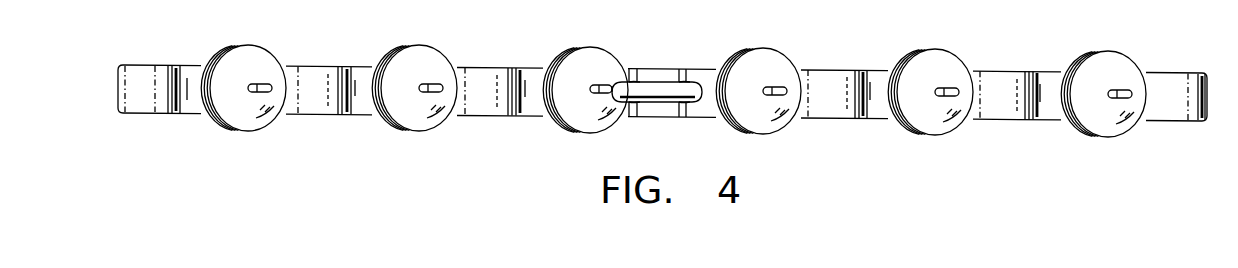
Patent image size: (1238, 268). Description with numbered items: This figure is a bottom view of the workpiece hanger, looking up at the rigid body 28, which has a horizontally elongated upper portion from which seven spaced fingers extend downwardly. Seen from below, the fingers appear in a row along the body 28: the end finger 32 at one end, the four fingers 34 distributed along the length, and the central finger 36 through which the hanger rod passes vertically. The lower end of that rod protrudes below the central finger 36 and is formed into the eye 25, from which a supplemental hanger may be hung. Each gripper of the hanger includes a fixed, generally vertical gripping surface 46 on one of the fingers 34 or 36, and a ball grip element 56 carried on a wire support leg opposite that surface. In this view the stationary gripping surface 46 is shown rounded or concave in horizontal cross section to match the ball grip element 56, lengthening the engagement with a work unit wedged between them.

The eye 25 is at (693, 98).
The body 28 is at (1008, 120).
The finger 32 is at (137, 113).
The finger 34 is at (1178, 122).
The central finger 36 is at (663, 118).
The gripping surface 46 is at (1143, 98).
The grip element 56 is at (388, 123).